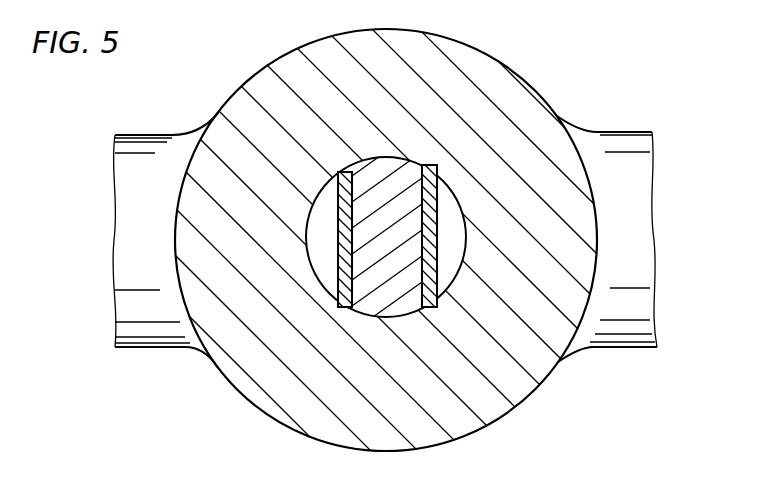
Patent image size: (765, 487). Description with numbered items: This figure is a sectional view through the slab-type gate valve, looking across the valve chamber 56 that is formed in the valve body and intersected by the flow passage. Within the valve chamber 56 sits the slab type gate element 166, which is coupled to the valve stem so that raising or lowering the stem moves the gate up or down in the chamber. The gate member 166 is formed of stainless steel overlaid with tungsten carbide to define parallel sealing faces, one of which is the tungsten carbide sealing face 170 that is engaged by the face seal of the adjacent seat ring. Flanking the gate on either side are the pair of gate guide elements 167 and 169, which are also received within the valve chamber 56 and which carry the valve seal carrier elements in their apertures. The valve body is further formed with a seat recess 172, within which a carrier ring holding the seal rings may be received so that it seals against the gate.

The valve chamber 56 is at (465, 257).
The slab type gate element 166 is at (405, 179).
The gate guide element 167 is at (338, 212).
The gate guide element 169 is at (433, 223).
The tungsten carbide sealing face 170 is at (342, 272).
The seat recess 172 is at (435, 292).